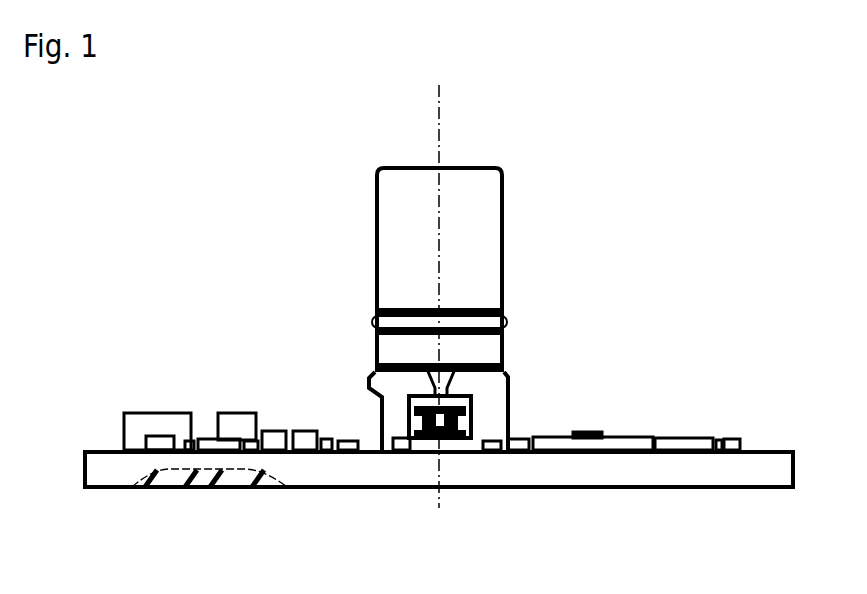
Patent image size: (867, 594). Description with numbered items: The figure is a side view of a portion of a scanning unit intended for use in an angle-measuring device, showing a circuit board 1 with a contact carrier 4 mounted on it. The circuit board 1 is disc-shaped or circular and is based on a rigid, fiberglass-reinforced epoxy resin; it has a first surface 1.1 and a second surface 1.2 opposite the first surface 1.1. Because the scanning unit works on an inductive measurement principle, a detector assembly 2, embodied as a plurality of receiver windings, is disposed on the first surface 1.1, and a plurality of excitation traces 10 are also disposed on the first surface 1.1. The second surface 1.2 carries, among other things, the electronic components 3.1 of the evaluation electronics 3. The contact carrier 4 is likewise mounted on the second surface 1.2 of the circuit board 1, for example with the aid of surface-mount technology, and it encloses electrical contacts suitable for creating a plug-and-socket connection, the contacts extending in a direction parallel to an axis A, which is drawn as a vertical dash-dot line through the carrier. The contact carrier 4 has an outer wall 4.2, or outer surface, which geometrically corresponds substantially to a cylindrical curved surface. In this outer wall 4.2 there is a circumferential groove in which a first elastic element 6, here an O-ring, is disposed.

The circuit board 1 is at (484, 470).
The first surface 1.1 is at (763, 492).
The second surface 1.2 is at (756, 445).
The detector assembly 2 is at (186, 490).
The excitation traces 10 is at (157, 490).
The evaluation electronics 3 is at (238, 394).
The electronic components 3.1 is at (173, 412).
The contact carrier 4 is at (376, 228).
The outer wall 4.2 is at (513, 230).
The first elastic element 6 is at (501, 322).
The axis A is at (437, 112).